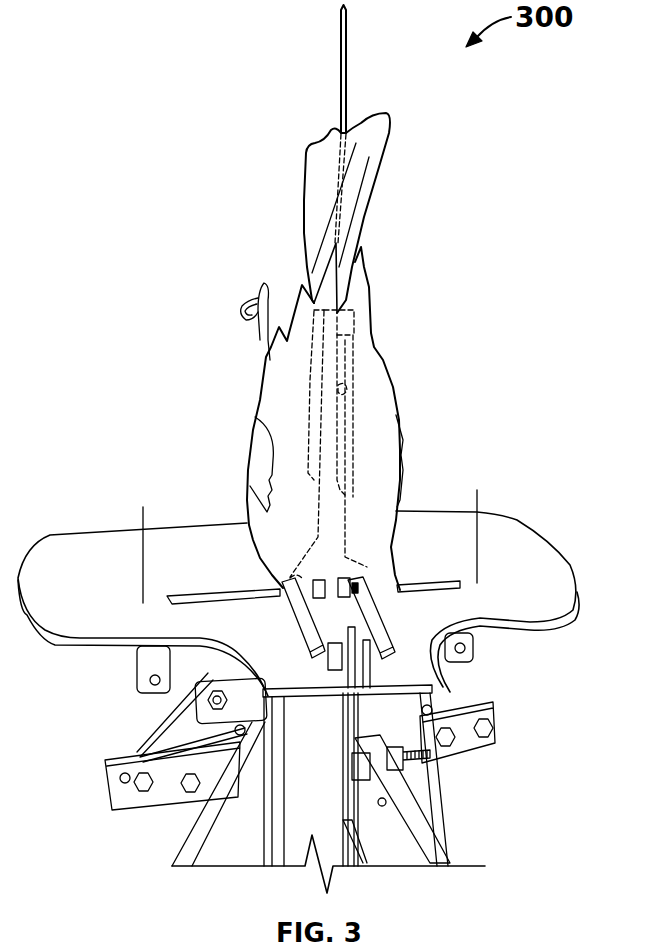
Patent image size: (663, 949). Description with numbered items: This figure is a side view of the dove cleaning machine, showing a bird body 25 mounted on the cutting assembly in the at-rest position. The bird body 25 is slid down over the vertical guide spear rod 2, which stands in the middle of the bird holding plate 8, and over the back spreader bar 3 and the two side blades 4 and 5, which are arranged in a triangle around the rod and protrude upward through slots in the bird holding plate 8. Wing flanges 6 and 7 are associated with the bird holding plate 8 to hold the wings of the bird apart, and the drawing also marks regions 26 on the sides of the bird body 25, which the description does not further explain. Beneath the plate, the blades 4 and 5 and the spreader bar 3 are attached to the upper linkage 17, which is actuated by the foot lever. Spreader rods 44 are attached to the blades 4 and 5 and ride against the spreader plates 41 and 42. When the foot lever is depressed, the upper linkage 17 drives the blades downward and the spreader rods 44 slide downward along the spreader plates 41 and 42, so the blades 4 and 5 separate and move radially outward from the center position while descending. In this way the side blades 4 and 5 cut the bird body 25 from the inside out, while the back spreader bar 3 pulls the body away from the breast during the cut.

The vertical guide spear rod 2 is at (343, 97).
The back spreader bar 3 is at (345, 328).
The side blade 4 is at (303, 397).
The side blade 5 is at (355, 408).
The wing flange 6 is at (142, 520).
The wing flange 7 is at (478, 500).
The bird holding plate 8 is at (543, 578).
The upper linkage 17 is at (430, 835).
The bird body 25 is at (368, 272).
The scale patch 26 is at (272, 448).
The spreader plate 41 is at (235, 822).
The spreader plate 42 is at (430, 790).
The spreader rods 44 is at (237, 732).